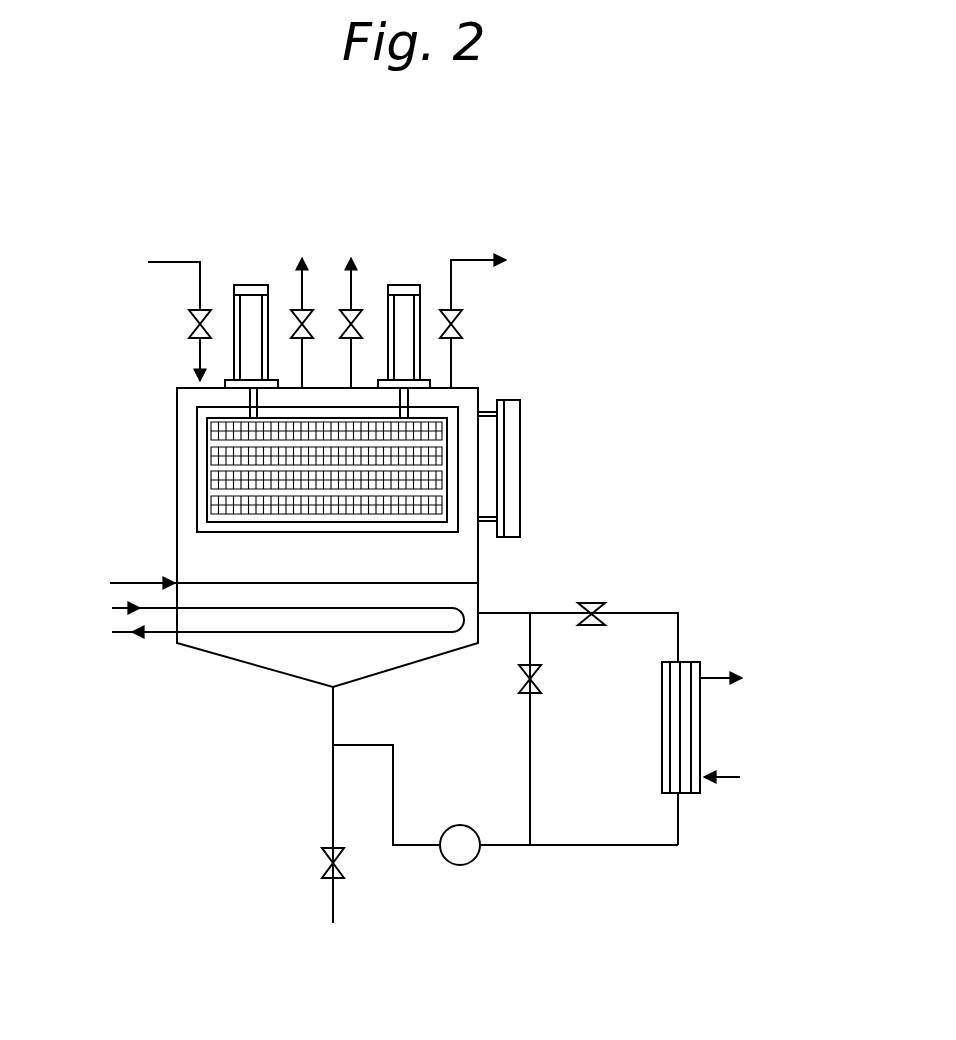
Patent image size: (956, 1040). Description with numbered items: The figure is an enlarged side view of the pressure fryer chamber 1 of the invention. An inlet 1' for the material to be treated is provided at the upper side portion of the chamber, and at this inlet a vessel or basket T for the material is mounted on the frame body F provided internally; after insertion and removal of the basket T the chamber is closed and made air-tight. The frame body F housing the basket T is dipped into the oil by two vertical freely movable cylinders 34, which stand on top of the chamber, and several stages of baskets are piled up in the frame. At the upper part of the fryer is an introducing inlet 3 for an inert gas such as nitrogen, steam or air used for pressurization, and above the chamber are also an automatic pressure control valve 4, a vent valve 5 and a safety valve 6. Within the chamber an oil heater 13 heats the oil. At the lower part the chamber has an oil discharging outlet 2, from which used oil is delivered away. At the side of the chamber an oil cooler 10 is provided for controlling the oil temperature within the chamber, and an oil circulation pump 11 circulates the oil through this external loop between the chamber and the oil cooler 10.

The pressure fryer chamber 1 is at (375, 537).
The inlet for the material to be treated 1' is at (528, 464).
The oil discharging outlet 2 is at (322, 690).
The introducing inlet 3 is at (166, 262).
The automatic pressure control valve 4 is at (302, 278).
The vent valve 5 is at (460, 322).
The safety valve 6 is at (352, 278).
The oil cooler 10 is at (665, 728).
The oil circulation pump 11 is at (460, 867).
The oil heater 13 is at (112, 608).
The vertical freely movable cylinders 34 is at (249, 285).
The frame body F is at (458, 530).
The vessel (basket) for the material to be treated T is at (440, 418).